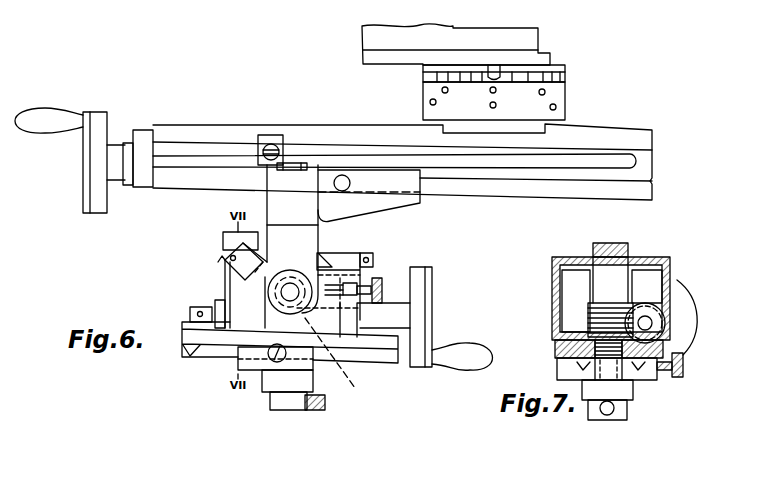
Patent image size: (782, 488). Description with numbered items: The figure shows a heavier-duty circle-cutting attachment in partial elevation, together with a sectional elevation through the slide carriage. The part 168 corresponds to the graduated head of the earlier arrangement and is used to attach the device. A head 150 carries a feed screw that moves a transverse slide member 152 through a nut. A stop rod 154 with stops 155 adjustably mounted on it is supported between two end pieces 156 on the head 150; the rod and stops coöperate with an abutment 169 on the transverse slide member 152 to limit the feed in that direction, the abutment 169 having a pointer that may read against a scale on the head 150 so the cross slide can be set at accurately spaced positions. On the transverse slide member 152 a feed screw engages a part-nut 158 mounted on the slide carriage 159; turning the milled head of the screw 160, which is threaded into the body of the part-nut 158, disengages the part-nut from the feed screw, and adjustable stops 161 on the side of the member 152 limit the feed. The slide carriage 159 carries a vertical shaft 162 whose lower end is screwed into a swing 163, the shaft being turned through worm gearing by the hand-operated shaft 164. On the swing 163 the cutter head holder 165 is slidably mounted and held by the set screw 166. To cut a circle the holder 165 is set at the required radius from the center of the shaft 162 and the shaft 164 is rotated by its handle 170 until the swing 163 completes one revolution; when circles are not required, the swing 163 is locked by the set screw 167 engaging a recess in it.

In FIG. 6, the head 150 is at (433, 118).
In FIG. 6, the transverse slide member 152 is at (373, 203).
In FIG. 6, the stop rod 154 is at (208, 148).
In FIG. 6, the stop 155 is at (269, 138).
In FIG. 6, the end piece 156 is at (145, 147).
In FIG. 6, the part-nut 158 is at (296, 326).
In FIG. 6, the slide carriage 159 is at (263, 290).
In FIG. 7, the slide carriage 159 is at (556, 302).
In FIG. 6, the screw 160 is at (362, 278).
In FIG. 6, the adjustable stop 161 is at (257, 253).
In FIG. 7, the vertical shaft 162 is at (610, 285).
In FIG. 6, the swing 163 is at (193, 355).
In FIG. 7, the swing 163 is at (673, 346).
In FIG. 6, the hand-operated shaft 164 is at (397, 318).
In FIG. 7, the hand-operated shaft 164 is at (647, 323).
In FIG. 6, the cutter head holder 165 is at (243, 362).
In FIG. 7, the cutter head holder 165 is at (637, 388).
In FIG. 6, the set screw 166 is at (276, 356).
In FIG. 7, the set screw 166 is at (684, 368).
In FIG. 6, the set screw 167 is at (192, 310).
In FIG. 6, the graduated head part 168 is at (425, 93).
In FIG. 6, the abutment 169 is at (297, 164).
In FIG. 6, the handle 170 is at (475, 360).